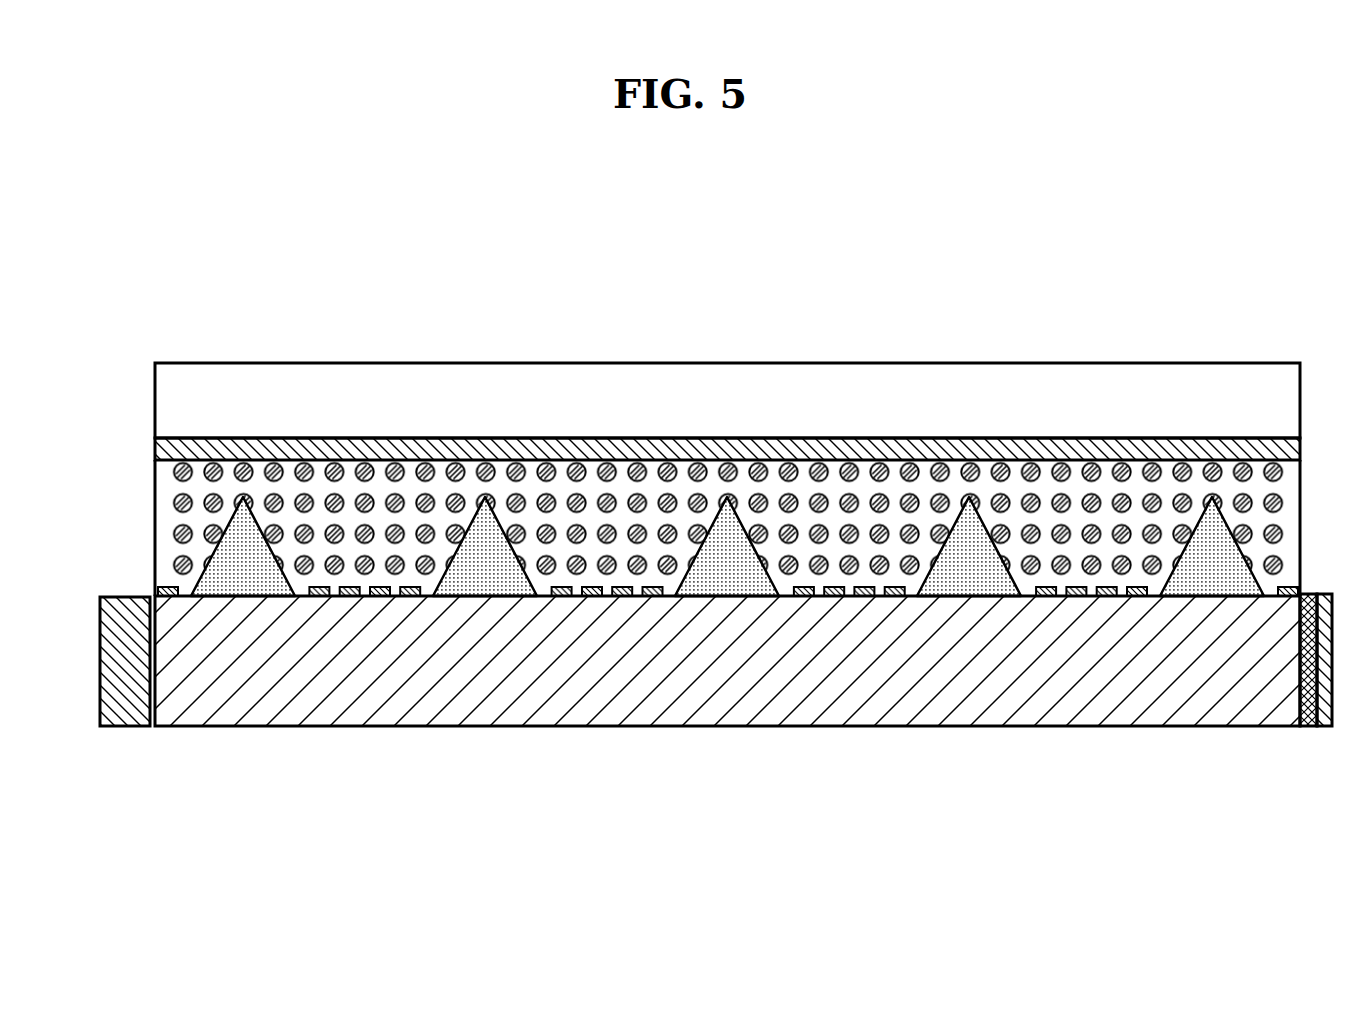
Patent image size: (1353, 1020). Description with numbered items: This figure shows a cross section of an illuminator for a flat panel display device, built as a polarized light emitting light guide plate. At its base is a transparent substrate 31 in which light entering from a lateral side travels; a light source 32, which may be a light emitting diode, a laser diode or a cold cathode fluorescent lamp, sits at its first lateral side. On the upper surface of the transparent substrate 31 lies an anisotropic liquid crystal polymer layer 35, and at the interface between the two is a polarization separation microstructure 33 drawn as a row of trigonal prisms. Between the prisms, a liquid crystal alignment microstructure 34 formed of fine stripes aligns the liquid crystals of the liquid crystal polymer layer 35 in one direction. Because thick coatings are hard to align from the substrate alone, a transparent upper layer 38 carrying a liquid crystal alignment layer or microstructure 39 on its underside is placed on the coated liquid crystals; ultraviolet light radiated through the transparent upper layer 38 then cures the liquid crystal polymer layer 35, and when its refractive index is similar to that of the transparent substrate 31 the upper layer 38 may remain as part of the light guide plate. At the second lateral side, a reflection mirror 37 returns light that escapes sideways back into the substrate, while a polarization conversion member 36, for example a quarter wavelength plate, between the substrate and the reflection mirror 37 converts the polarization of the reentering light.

The transparent substrate 31 is at (373, 714).
The light source 32 is at (108, 695).
The polarization separation microstructure 33 is at (220, 553).
The liquid crystal alignment microstructure 34 is at (160, 588).
The liquid crystal polymer layer 35 is at (163, 477).
The polarization conversion member 36 is at (1305, 727).
The reflection mirror 37 is at (1325, 727).
The transparent upper layer 38 is at (160, 387).
The liquid crystal alignment layer or microstructure 39 is at (160, 447).